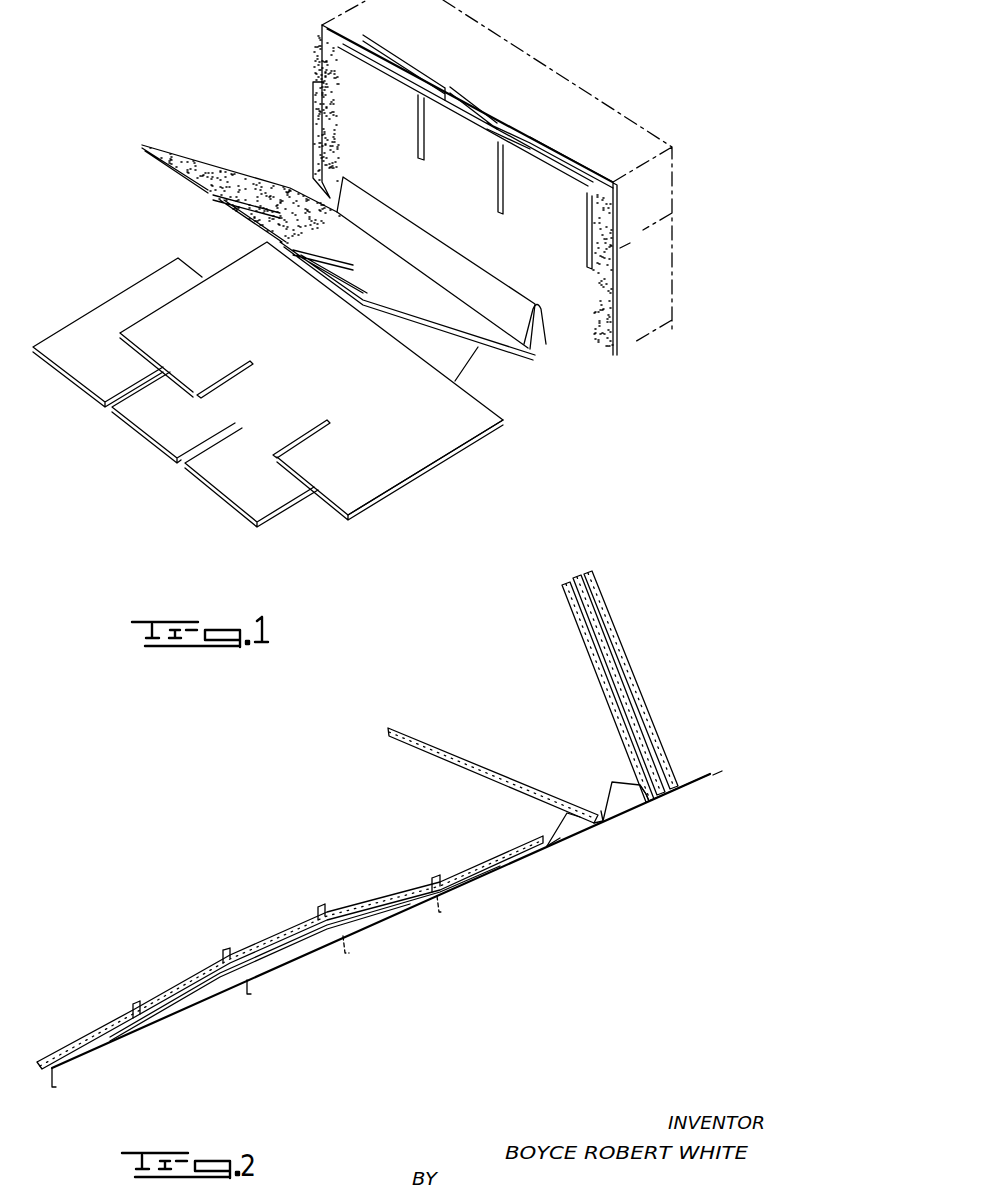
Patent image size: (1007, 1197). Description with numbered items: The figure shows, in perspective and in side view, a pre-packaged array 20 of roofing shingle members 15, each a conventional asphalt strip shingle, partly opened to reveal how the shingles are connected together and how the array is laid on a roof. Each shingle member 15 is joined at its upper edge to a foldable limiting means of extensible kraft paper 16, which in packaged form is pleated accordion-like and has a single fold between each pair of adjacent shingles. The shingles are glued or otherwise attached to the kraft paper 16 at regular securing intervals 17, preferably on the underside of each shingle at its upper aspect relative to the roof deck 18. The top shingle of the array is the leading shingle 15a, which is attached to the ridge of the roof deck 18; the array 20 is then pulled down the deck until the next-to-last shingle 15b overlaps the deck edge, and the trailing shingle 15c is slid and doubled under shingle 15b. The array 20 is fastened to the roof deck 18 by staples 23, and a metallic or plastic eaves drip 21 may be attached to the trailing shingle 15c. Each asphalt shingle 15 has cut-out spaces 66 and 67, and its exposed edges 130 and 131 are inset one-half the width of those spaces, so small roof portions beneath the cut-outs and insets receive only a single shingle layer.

In FIG. 1, the shingle member 15 is at (405, 296).
In FIG. 2, the shingle member 15 is at (496, 772).
In FIG. 1, the leading shingle 15a is at (383, 190).
In FIG. 2, the leading shingle 15a is at (628, 671).
In FIG. 1, the next-to-last shingle 15b is at (347, 364).
In FIG. 2, the next-to-last shingle 15b is at (153, 1010).
In FIG. 1, the trailing shingle 15c is at (201, 434).
In FIG. 2, the trailing shingle 15c is at (207, 995).
In FIG. 1, the kraft paper 16 is at (470, 357).
In FIG. 2, the kraft paper 16 is at (553, 830).
In FIG. 1, the securing interval 17 is at (540, 340).
In FIG. 2, the securing interval 17 is at (643, 797).
In FIG. 2, the roof deck 18 is at (565, 834).
In FIG. 1, the array 20 is at (654, 146).
In FIG. 2, the array 20 is at (612, 621).
In FIG. 2, the eaves drip 21 is at (55, 1074).
In FIG. 2, the staples 23 is at (248, 984).
In FIG. 1, the cut-out space 66 is at (313, 436).
In FIG. 1, the cut-out space 67 is at (233, 376).
In FIG. 1, the exposed edge 130 is at (383, 486).
In FIG. 1, the exposed edge 131 is at (133, 322).